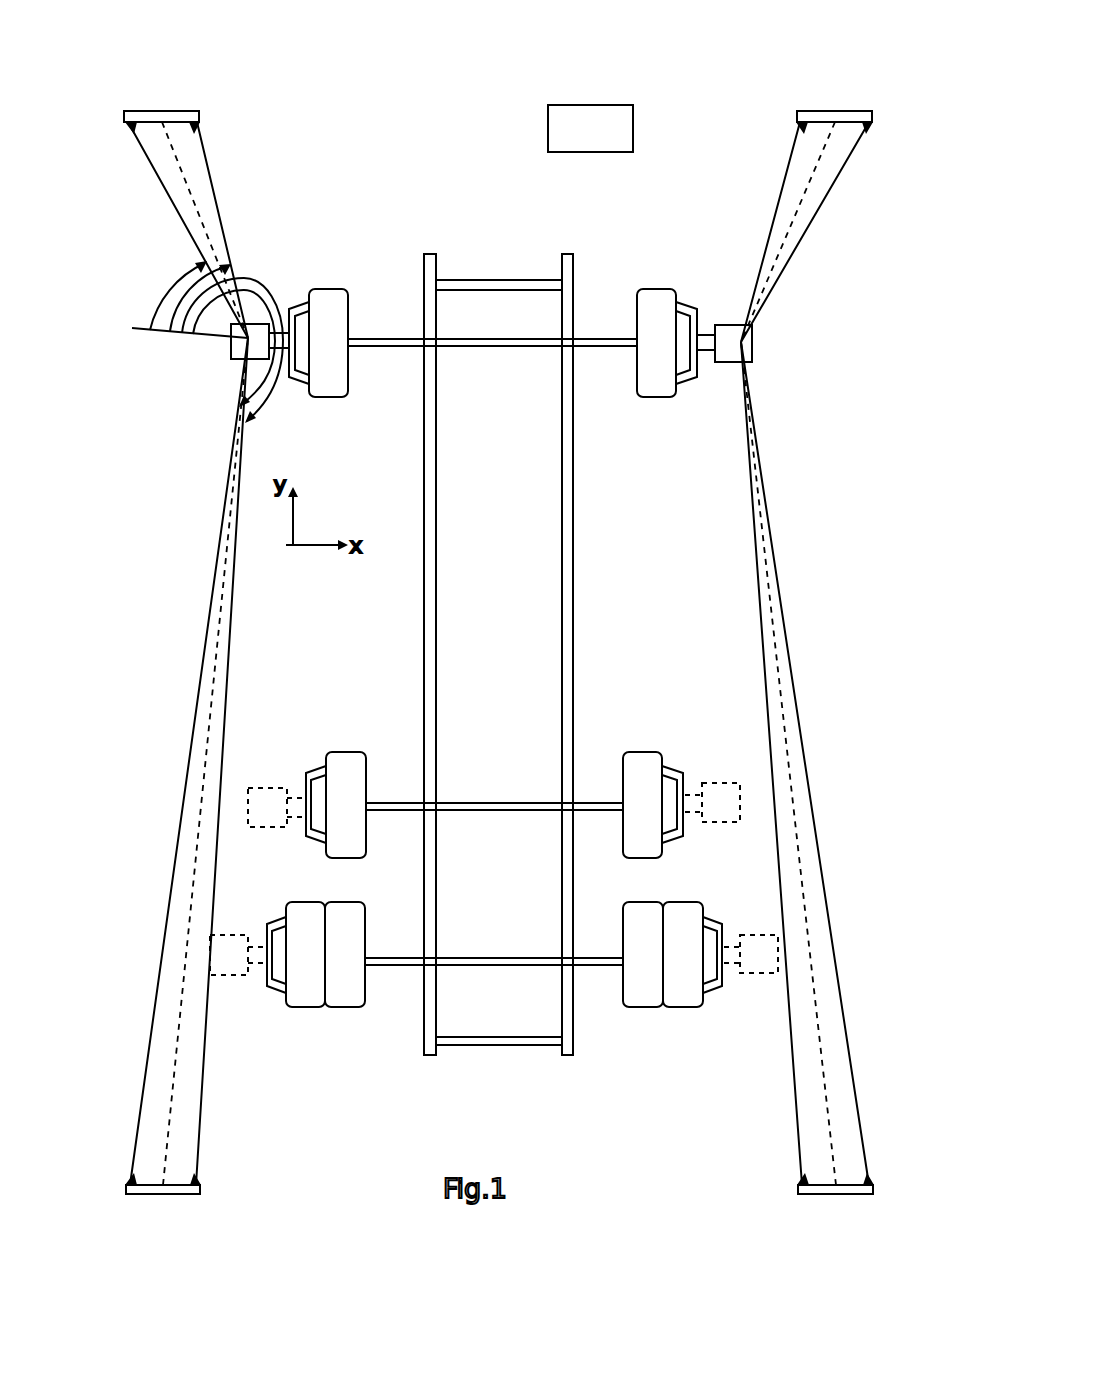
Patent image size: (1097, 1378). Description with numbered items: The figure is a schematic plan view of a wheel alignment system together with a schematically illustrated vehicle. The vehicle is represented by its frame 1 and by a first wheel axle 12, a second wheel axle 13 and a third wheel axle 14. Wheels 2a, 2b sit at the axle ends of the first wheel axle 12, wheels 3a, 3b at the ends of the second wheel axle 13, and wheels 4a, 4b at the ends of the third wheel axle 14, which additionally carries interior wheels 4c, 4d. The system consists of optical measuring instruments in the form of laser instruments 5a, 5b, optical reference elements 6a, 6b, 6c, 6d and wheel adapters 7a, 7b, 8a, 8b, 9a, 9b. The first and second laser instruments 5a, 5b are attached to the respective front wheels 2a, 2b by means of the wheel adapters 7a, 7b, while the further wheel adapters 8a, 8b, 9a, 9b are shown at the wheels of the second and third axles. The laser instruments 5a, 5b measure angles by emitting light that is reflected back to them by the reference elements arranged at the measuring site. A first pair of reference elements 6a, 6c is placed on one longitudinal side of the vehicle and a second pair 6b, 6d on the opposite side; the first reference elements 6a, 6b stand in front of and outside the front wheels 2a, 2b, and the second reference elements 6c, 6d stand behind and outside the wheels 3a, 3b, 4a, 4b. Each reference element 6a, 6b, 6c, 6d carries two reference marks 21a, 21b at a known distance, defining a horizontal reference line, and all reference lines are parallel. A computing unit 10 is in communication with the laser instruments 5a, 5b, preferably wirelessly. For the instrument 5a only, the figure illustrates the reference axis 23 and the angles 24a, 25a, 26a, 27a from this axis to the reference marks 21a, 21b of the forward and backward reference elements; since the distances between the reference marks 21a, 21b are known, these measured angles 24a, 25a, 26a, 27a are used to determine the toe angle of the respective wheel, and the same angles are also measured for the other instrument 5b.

The frame 1 is at (575, 258).
The front wheel 2a is at (333, 385).
The front wheel 2b is at (655, 397).
The wheel 3a is at (343, 760).
The wheel 3b is at (636, 760).
The wheel 4a is at (307, 913).
The wheel 4b is at (677, 1005).
The interior wheel 4c is at (345, 913).
The interior wheel 4d is at (640, 915).
The laser instrument 5a is at (240, 337).
The laser instrument 5b is at (746, 350).
The reference element 6a is at (131, 111).
The reference element 6b is at (862, 111).
The reference element 6c is at (175, 1185).
The reference element 6d is at (805, 1183).
The wheel adapter 7a is at (291, 305).
The wheel adapter 7b is at (698, 308).
The wheel adapter 8a is at (305, 790).
The wheel adapter 8b is at (688, 785).
The wheel adapter 9a is at (267, 920).
The wheel adapter 9b is at (718, 922).
The computing unit 10 is at (548, 130).
The first wheel axle 12 is at (490, 347).
The second wheel axle 13 is at (487, 808).
The third wheel axle 14 is at (490, 965).
The reference mark 21a is at (148, 140).
The reference mark 21b is at (200, 130).
The reference axis 23 is at (147, 332).
The angle 24a is at (168, 283).
The angle 25a is at (236, 252).
The angle 26a is at (262, 412).
The angle 27a is at (265, 390).